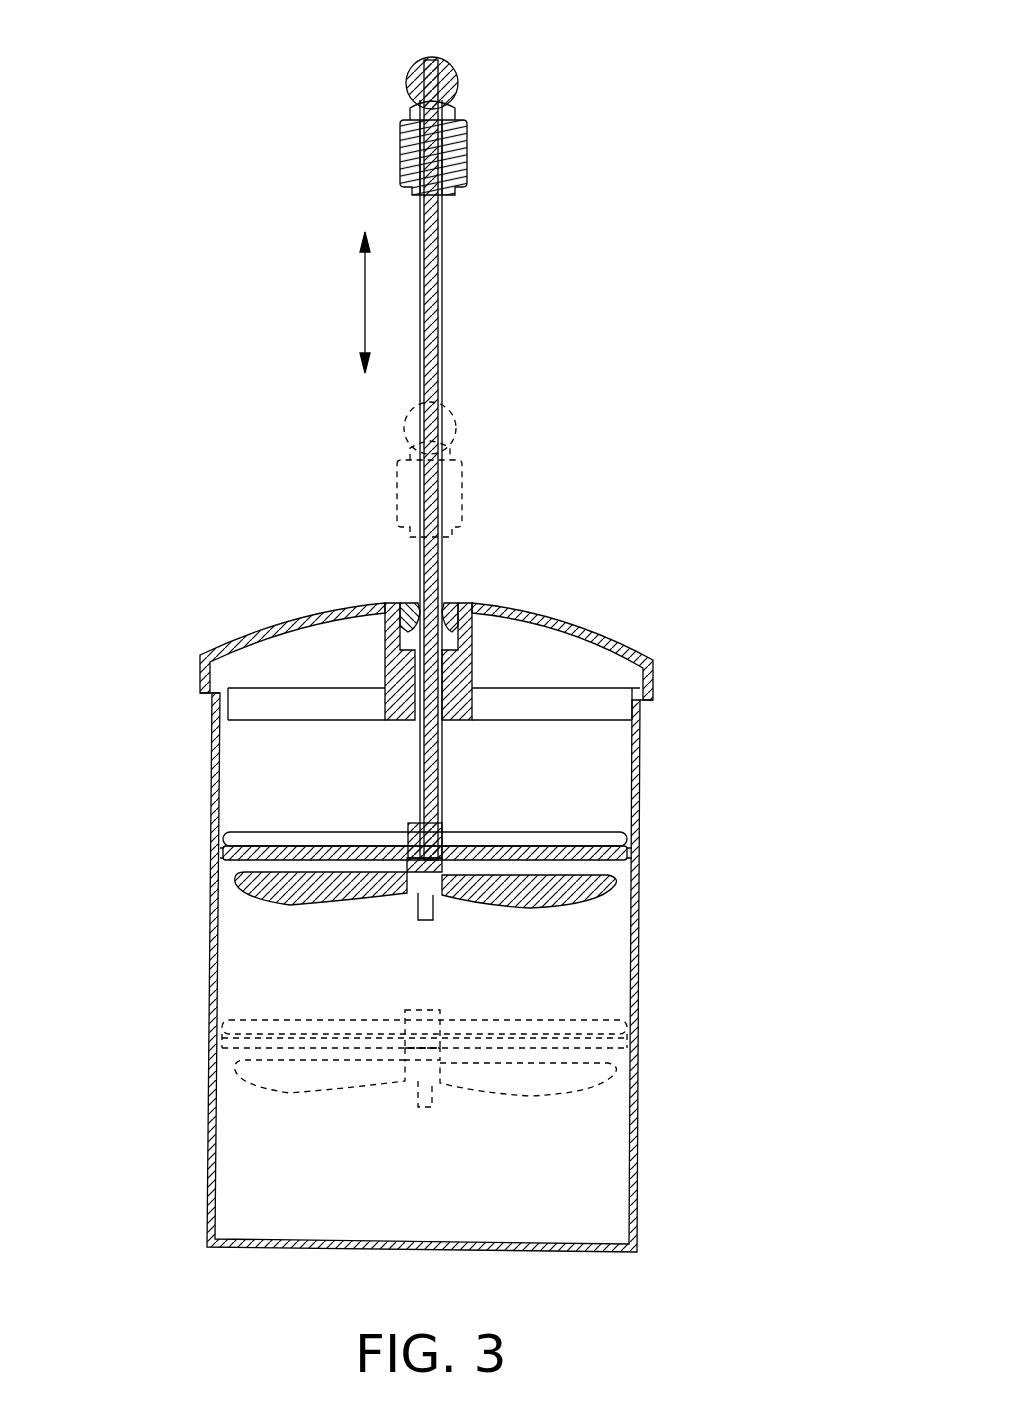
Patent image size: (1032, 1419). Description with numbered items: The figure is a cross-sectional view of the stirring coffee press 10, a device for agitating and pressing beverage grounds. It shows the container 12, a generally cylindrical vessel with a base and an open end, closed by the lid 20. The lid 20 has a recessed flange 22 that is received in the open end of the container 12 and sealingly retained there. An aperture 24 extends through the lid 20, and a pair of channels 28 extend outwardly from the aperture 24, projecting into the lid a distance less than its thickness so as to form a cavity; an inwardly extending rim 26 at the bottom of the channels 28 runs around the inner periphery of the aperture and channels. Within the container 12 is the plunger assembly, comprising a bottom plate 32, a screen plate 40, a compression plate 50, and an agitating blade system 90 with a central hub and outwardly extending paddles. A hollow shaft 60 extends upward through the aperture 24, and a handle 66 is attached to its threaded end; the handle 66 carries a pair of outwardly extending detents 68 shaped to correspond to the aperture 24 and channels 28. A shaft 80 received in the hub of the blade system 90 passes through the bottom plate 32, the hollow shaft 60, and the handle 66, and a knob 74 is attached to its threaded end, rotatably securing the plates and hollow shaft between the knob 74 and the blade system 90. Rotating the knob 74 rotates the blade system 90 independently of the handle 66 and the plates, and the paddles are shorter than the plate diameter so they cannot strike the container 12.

The stirring coffee press 10 is at (582, 292).
The container 12 is at (210, 985).
The lid 20 is at (605, 640).
The recessed flange 22 is at (632, 718).
The aperture 24 is at (447, 612).
The inwardly extending rim 26 is at (400, 610).
The channels 28 is at (403, 622).
The bottom plate 32 is at (228, 860).
The screen plate 40 is at (640, 855).
The compression plate 50 is at (258, 836).
The hollow shaft 60 is at (442, 327).
The handle 66 is at (452, 106).
The detents 68 is at (400, 152).
The knob 74 is at (455, 78).
The shaft 80 is at (420, 370).
The agitating blade system 90 is at (510, 905).